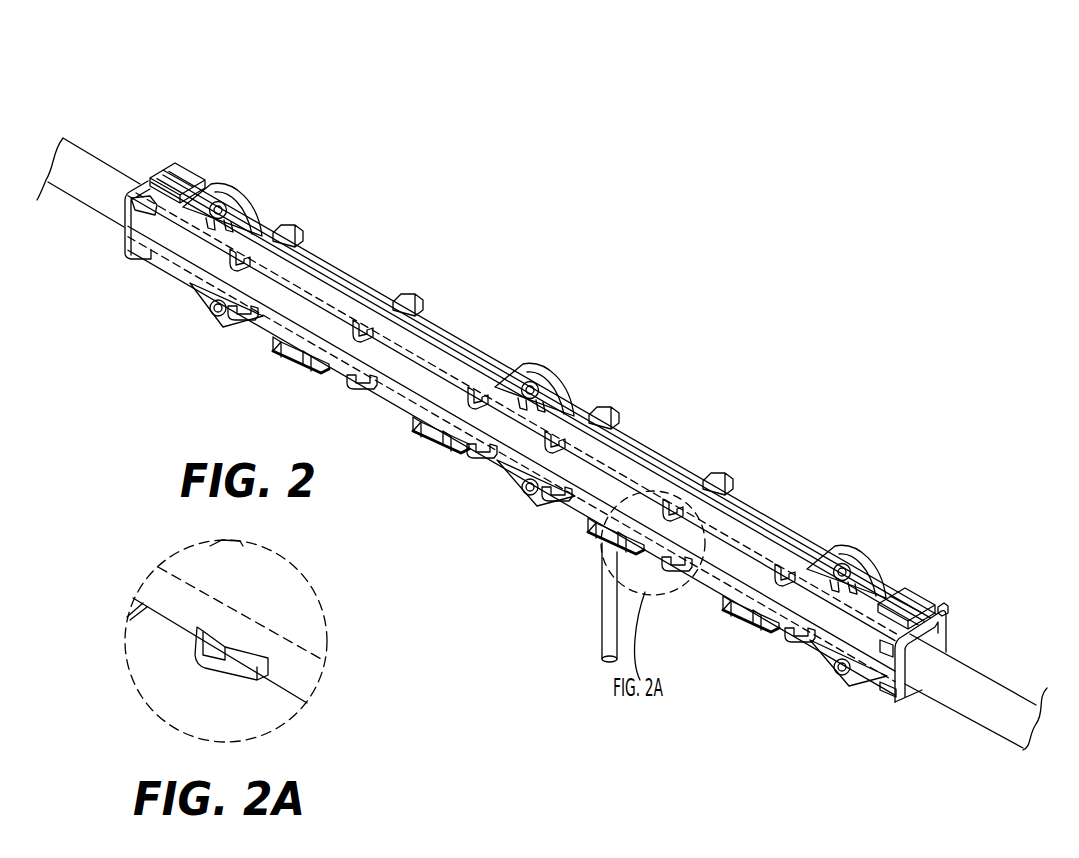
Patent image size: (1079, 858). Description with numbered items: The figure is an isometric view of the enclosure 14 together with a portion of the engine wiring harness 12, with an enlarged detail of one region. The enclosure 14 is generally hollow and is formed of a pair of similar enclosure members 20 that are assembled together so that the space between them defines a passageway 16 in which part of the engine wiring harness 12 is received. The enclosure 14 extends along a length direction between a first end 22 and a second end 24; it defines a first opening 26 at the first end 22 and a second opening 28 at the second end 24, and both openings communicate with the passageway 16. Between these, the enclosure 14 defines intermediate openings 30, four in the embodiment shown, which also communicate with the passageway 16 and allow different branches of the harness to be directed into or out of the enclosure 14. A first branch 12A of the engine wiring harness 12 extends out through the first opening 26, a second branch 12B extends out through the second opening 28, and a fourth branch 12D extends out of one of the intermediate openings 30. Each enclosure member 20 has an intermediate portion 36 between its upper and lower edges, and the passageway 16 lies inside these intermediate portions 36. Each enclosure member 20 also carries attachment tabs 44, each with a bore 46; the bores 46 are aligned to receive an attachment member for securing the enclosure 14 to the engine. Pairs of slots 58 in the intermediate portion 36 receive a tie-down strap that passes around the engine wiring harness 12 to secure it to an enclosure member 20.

In FIG. 2, the engine wiring harness 12 is at (542, 387).
In FIG. 2, the first branch 12A is at (88, 153).
In FIG. 2, the second branch 12B is at (983, 687).
In FIG. 2, the fourth branch 12D is at (605, 650).
In FIG. 2, the enclosure 14 is at (565, 372).
In FIG. 2, the passageway 16 is at (920, 698).
In FIG. 2, the enclosure member 20 is at (355, 257).
In FIG. 2, the first end 22 is at (206, 129).
In FIG. 2, the second end 24 is at (978, 634).
In FIG. 2, the first opening 26 is at (173, 165).
In FIG. 2, the second opening 28 is at (933, 634).
In FIG. 2, the intermediate opening 30 is at (293, 366).
In FIG. 2, the intermediate portion 36 is at (942, 610).
In FIG. 2, the attachment tab 44 is at (245, 186).
In FIG. 2, the bore 46 is at (218, 202).
In FIG. 2, the slot 58 is at (290, 245).
In FIG. 2A, the slot 58 is at (268, 680).